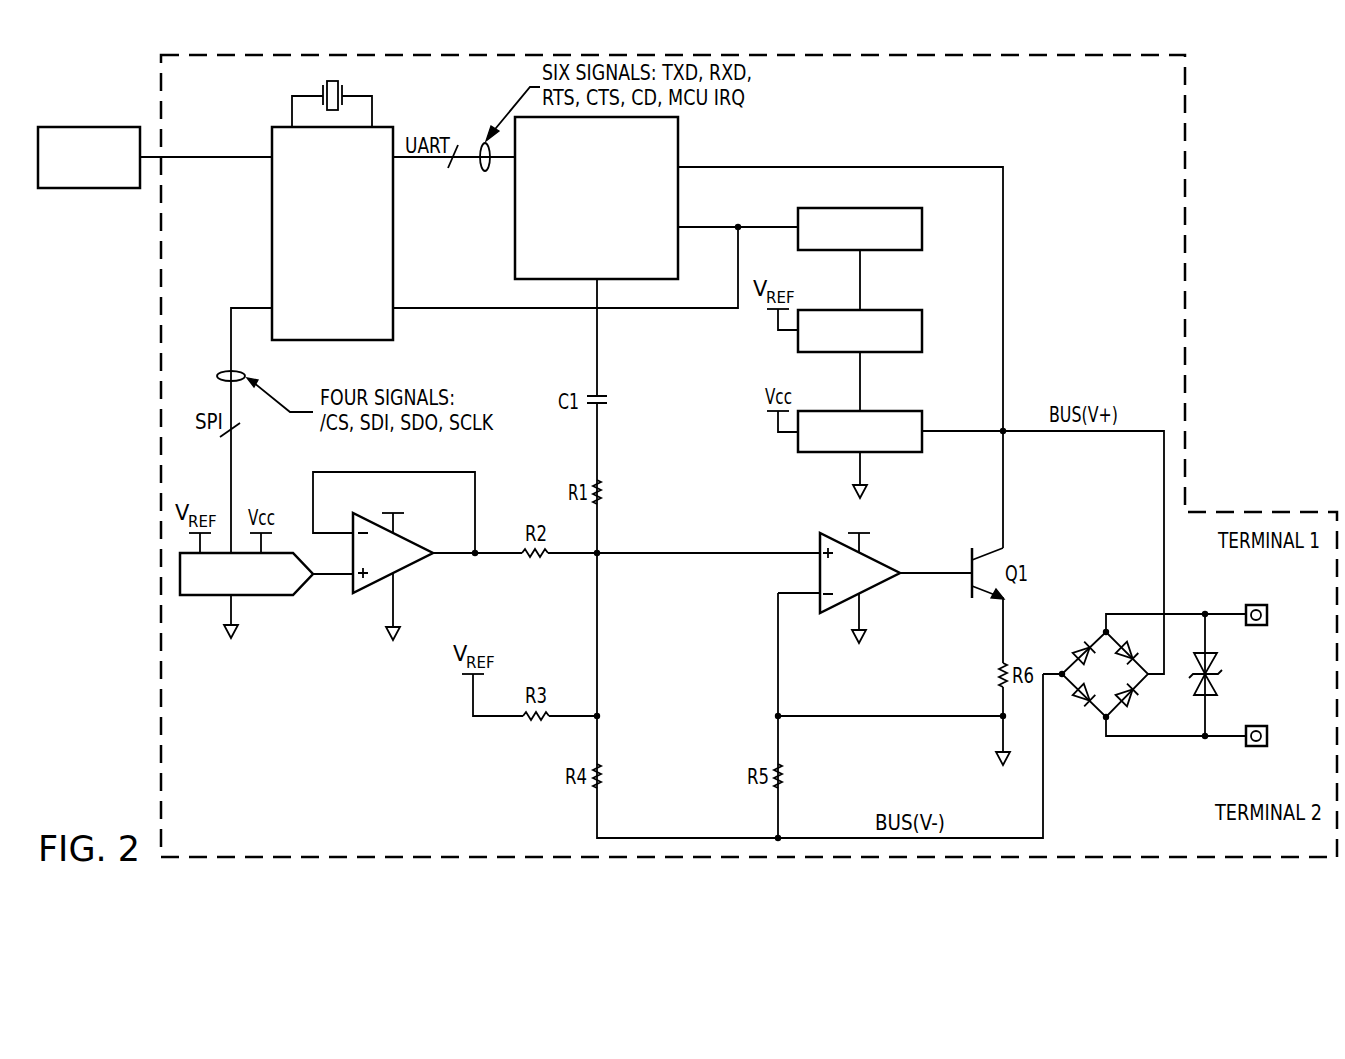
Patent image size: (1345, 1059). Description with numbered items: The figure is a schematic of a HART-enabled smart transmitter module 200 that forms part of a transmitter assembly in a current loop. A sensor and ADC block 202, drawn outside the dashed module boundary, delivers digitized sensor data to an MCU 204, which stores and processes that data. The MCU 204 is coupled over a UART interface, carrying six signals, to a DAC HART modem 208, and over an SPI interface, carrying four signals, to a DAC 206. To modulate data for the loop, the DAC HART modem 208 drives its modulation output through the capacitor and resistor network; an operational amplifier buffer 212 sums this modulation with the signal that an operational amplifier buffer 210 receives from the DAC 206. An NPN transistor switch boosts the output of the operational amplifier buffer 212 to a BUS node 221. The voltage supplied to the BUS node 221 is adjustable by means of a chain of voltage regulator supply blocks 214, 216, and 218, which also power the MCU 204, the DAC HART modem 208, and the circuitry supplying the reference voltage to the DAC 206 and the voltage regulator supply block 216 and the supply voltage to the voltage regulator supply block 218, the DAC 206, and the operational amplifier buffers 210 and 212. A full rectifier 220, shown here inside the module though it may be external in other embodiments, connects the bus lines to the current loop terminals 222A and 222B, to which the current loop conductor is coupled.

The HART-enabled smart transmitter module 200 is at (161, 517).
The sensor and ADC block 202 is at (88, 127).
The MCU 204 is at (272, 232).
The DAC 206 is at (212, 595).
The DAC HART modem 208 is at (678, 147).
The operational amplifier buffer 210 is at (403, 572).
The operational amplifier buffer 212 is at (870, 590).
The voltage regulator supply block 214 is at (922, 218).
The voltage regulator supply block 216 is at (922, 319).
The voltage regulator supply block 218 is at (922, 420).
The full rectifier 220 is at (1148, 604).
The BUS node 221 is at (1004, 436).
The current loop terminal 222A is at (1256, 605).
The current loop terminal 222B is at (1258, 746).